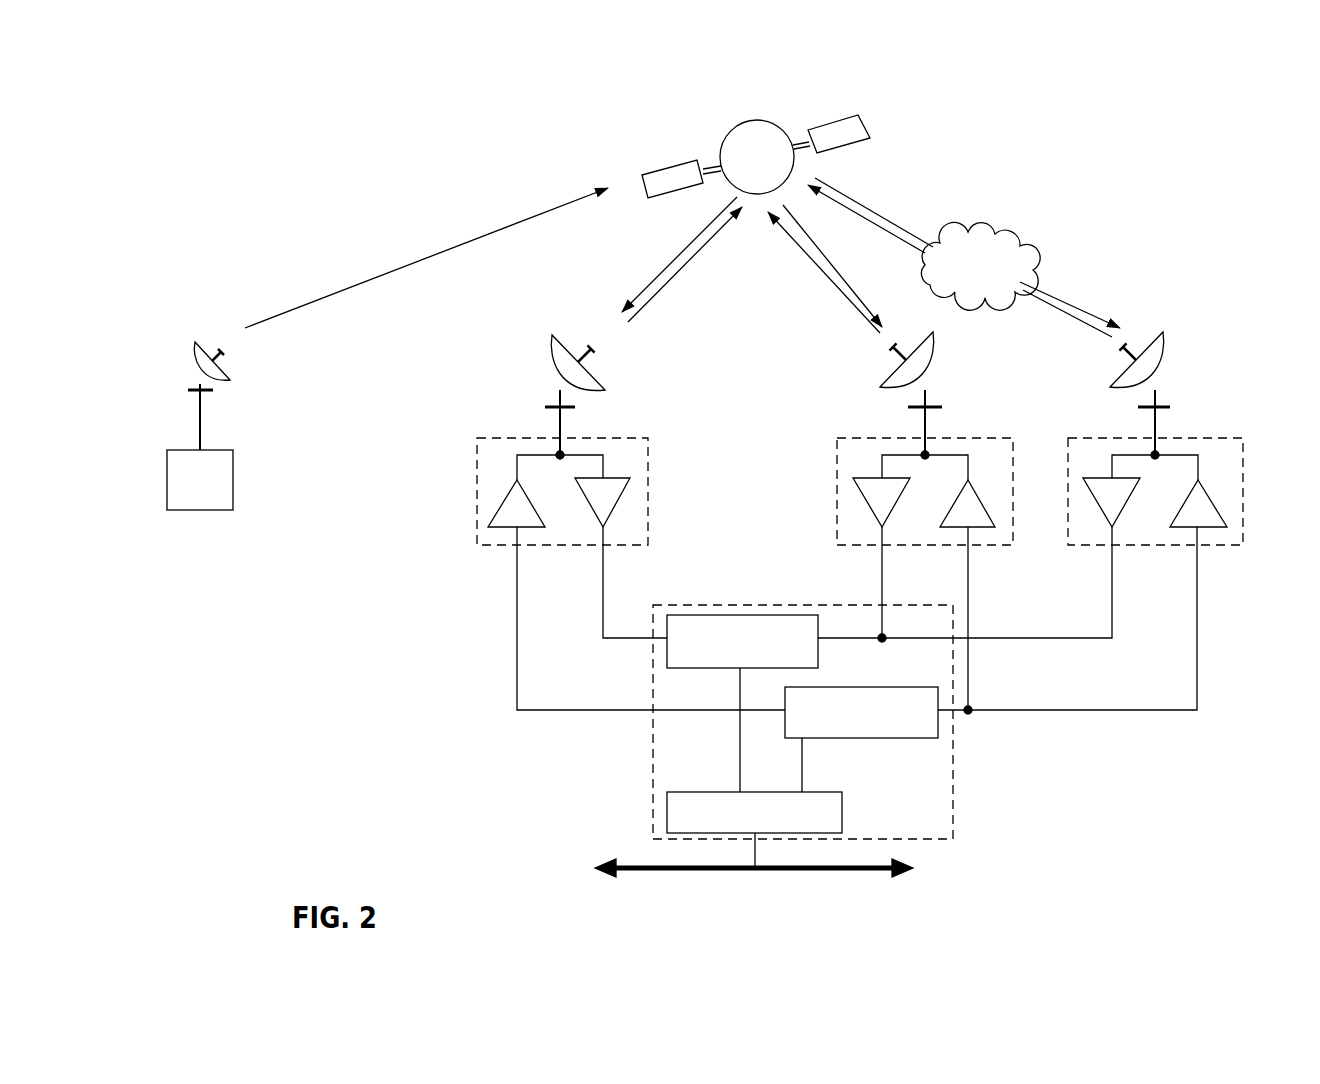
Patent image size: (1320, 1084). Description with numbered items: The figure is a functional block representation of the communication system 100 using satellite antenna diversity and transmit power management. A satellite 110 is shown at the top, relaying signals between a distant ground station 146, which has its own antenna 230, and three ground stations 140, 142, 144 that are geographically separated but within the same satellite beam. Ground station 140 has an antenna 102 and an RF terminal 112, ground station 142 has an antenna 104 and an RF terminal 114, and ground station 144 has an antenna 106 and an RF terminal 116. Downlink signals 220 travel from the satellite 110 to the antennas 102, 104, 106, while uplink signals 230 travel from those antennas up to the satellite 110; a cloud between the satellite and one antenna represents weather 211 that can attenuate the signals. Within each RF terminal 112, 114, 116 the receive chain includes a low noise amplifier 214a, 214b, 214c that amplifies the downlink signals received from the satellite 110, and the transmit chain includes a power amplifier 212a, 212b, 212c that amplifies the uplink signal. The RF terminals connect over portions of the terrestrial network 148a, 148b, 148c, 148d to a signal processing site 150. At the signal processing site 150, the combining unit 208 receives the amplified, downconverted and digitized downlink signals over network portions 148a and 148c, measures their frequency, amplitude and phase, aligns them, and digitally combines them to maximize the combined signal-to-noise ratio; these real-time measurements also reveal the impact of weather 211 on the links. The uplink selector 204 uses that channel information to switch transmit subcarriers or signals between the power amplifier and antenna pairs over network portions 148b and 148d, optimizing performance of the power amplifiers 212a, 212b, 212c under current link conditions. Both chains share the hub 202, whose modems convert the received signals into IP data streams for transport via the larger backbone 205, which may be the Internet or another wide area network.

The communication system 100 is at (1062, 128).
The satellite 110 is at (748, 133).
The weather 211 is at (1003, 243).
The downlink signal 220 is at (683, 250).
The uplink signal 230 is at (400, 265).
The distant ground station 146 is at (220, 452).
The antenna 102 is at (567, 360).
The antenna 104 is at (892, 372).
The antenna 106 is at (1118, 372).
The ground station 140 is at (563, 429).
The ground station 142 is at (902, 438).
The ground station 144 is at (1162, 438).
The RF terminal 112 is at (563, 478).
The RF terminal 114 is at (893, 472).
The RF terminal 116 is at (1151, 472).
The power amplifier 212a is at (500, 510).
The power amplifier 212b is at (972, 495).
The power amplifier 212c is at (1200, 495).
The low noise amplifier 214a is at (603, 493).
The low noise amplifier 214b is at (880, 492).
The low noise amplifier 214c is at (1117, 505).
The terrestrial network portion 148a is at (603, 625).
The terrestrial network portion 148b is at (620, 710).
The terrestrial network portion 148c is at (1068, 637).
The terrestrial network portion 148d is at (1098, 710).
The signal processing site 150 is at (807, 706).
The combining unit 208 is at (680, 612).
The uplink selector 204 is at (928, 686).
The hub 202 is at (675, 800).
The backbone 205 is at (668, 862).